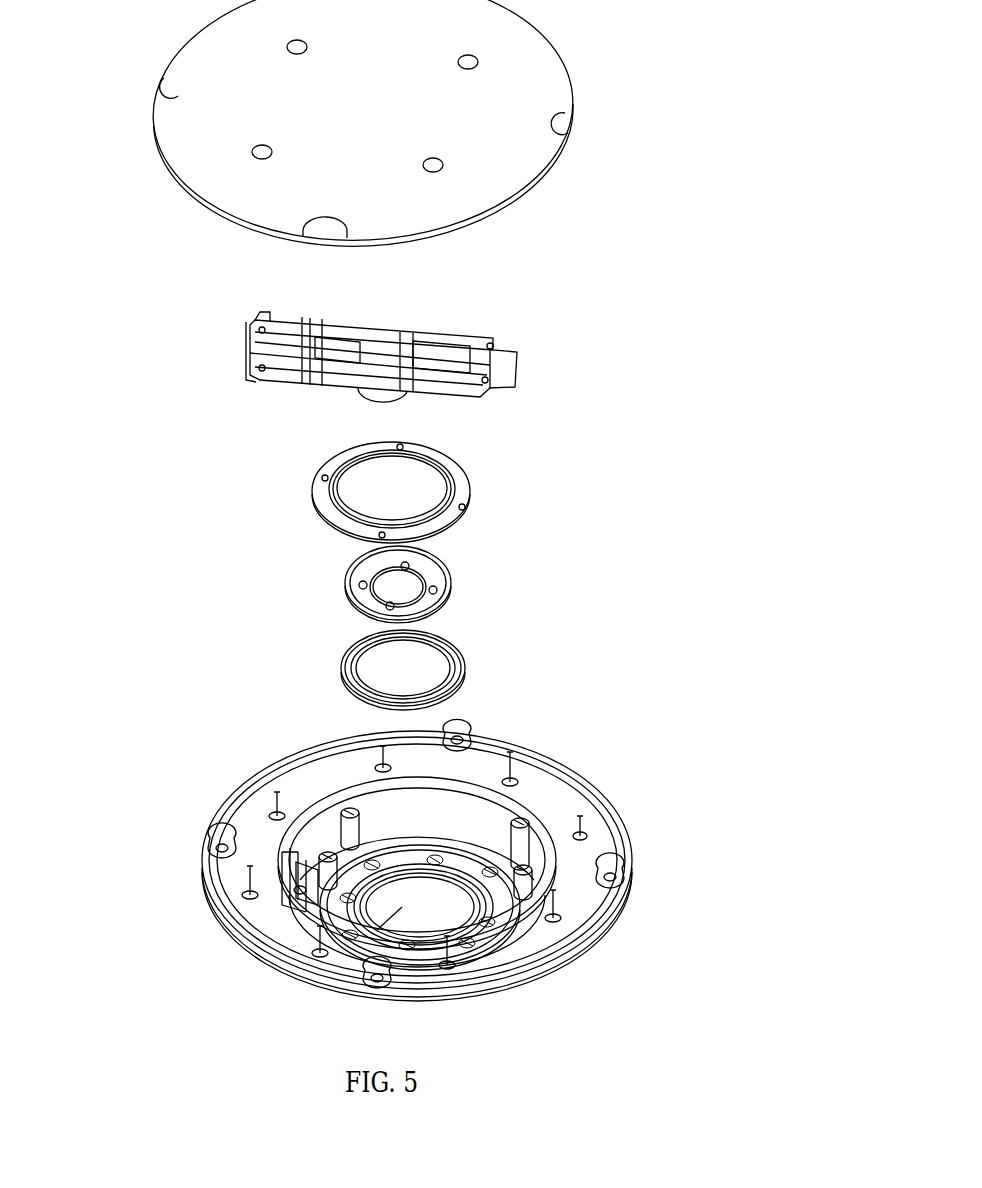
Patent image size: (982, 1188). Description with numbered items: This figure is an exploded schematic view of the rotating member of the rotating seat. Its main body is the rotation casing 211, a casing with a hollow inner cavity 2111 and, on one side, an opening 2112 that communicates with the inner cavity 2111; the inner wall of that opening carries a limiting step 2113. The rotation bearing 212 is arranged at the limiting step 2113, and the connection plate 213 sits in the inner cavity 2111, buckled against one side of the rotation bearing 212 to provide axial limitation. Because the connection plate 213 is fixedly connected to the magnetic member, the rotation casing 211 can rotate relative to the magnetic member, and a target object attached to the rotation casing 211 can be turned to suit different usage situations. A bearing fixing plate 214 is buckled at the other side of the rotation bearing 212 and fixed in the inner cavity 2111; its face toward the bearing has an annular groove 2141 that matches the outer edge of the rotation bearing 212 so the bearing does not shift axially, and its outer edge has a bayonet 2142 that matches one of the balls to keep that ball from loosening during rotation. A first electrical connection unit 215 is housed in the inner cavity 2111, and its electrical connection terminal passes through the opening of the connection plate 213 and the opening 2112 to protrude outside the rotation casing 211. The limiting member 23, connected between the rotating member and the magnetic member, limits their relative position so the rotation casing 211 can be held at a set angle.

The rotation casing 211 is at (398, 838).
The inner cavity 2111 is at (398, 837).
The opening 2112 is at (303, 960).
The limiting step 2113 is at (290, 867).
The rotation bearing 212 is at (343, 672).
The connection plate 213 is at (452, 577).
The bearing fixing plate 214 is at (381, 504).
The annular groove 2141 is at (458, 482).
The bayonet 2142 is at (338, 515).
The first electrical connection unit 215 is at (495, 340).
The limiting member 23 is at (525, 855).